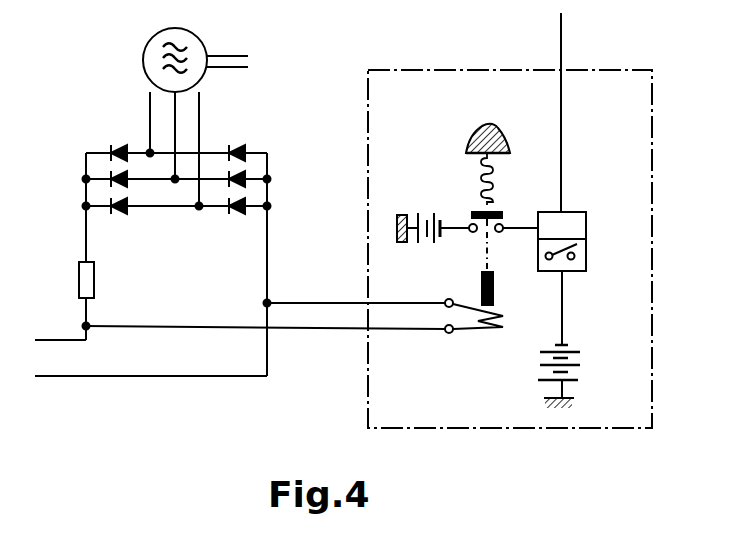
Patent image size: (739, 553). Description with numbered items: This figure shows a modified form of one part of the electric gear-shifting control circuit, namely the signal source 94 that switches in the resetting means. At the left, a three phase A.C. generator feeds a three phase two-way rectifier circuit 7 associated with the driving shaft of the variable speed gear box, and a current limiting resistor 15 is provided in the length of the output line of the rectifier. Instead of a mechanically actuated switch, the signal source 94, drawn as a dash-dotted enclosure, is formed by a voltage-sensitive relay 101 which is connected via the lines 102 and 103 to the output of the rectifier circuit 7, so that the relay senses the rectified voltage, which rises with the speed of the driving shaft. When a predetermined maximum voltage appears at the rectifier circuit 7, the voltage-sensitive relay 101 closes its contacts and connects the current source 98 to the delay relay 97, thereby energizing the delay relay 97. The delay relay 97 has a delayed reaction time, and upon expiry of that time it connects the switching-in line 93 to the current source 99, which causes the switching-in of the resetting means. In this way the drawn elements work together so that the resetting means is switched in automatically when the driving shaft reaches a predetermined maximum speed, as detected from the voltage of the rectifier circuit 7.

The three phase two-way rectifier circuit 7 is at (180, 192).
The current limiting resistor 15 is at (80, 278).
The switching-in line 93 is at (562, 45).
The signal source 94 is at (703, 154).
The delay relay 97 is at (586, 250).
The current source 98 is at (432, 252).
The current source 99 is at (576, 372).
The voltage-sensitive relay 101 is at (483, 258).
The line 102 is at (336, 302).
The line 103 is at (337, 331).